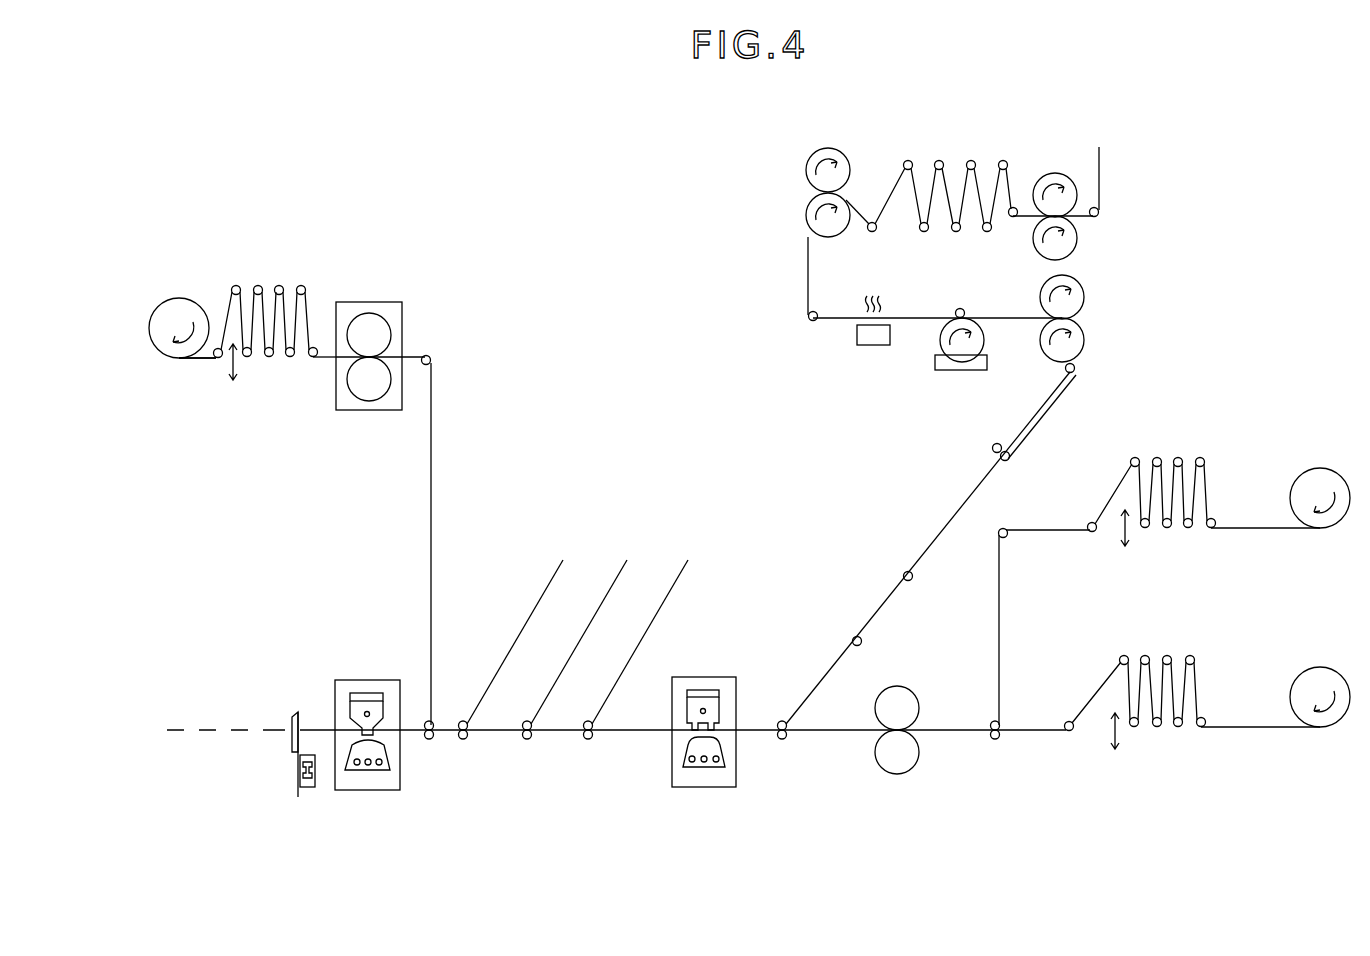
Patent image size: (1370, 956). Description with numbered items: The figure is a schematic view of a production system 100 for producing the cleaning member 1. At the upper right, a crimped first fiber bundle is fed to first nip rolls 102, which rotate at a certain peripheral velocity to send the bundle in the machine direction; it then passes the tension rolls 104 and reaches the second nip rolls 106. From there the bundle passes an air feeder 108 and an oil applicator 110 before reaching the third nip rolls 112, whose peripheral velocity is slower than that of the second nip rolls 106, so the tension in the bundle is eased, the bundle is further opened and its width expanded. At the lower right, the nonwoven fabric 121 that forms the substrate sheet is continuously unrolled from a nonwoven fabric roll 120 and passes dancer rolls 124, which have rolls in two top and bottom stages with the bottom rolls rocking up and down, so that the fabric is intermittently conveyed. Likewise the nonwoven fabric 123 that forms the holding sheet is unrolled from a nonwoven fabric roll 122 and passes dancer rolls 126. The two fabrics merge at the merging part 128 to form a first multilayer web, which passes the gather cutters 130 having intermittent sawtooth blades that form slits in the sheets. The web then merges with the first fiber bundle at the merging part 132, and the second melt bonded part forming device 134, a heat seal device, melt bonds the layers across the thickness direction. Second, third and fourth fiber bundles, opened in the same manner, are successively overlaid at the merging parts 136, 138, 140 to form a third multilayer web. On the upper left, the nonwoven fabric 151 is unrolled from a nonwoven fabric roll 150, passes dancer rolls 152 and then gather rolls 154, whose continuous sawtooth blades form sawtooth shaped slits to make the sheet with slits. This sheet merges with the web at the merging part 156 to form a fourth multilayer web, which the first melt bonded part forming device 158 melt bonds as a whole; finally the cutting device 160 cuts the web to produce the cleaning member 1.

The cleaning member 1 is at (210, 733).
The production system 100 is at (1205, 150).
The first nip rolls 102 is at (1053, 185).
The tension rolls 104 is at (971, 160).
The second nip rolls 106 is at (832, 160).
The air feeder 108 is at (857, 335).
The oil applicator 110 is at (945, 340).
The third nip rolls 112 is at (1072, 288).
The nonwoven fabric roll 120 is at (1320, 680).
The nonwoven fabric 121 is at (1235, 727).
The nonwoven fabric roll 122 is at (1320, 480).
The nonwoven fabric 123 is at (1243, 528).
The dancer rolls 124 is at (1152, 645).
The dancer rolls 126 is at (1150, 448).
The merging part 128 is at (1005, 718).
The gather cutters 130 is at (893, 700).
The merging part 132 is at (787, 754).
The second melt bonded part forming device 134 is at (700, 677).
The merging part 136 is at (593, 754).
The merging part 138 is at (530, 754).
The merging part 140 is at (468, 754).
The nonwoven fabric roll 150 is at (178, 318).
The nonwoven fabric 151 is at (200, 360).
The dancer rolls 152 is at (285, 268).
The gather rolls 154 is at (367, 292).
The merging part 156 is at (432, 752).
The first melt bonded part forming device 158 is at (345, 680).
The cutting device 160 is at (312, 790).